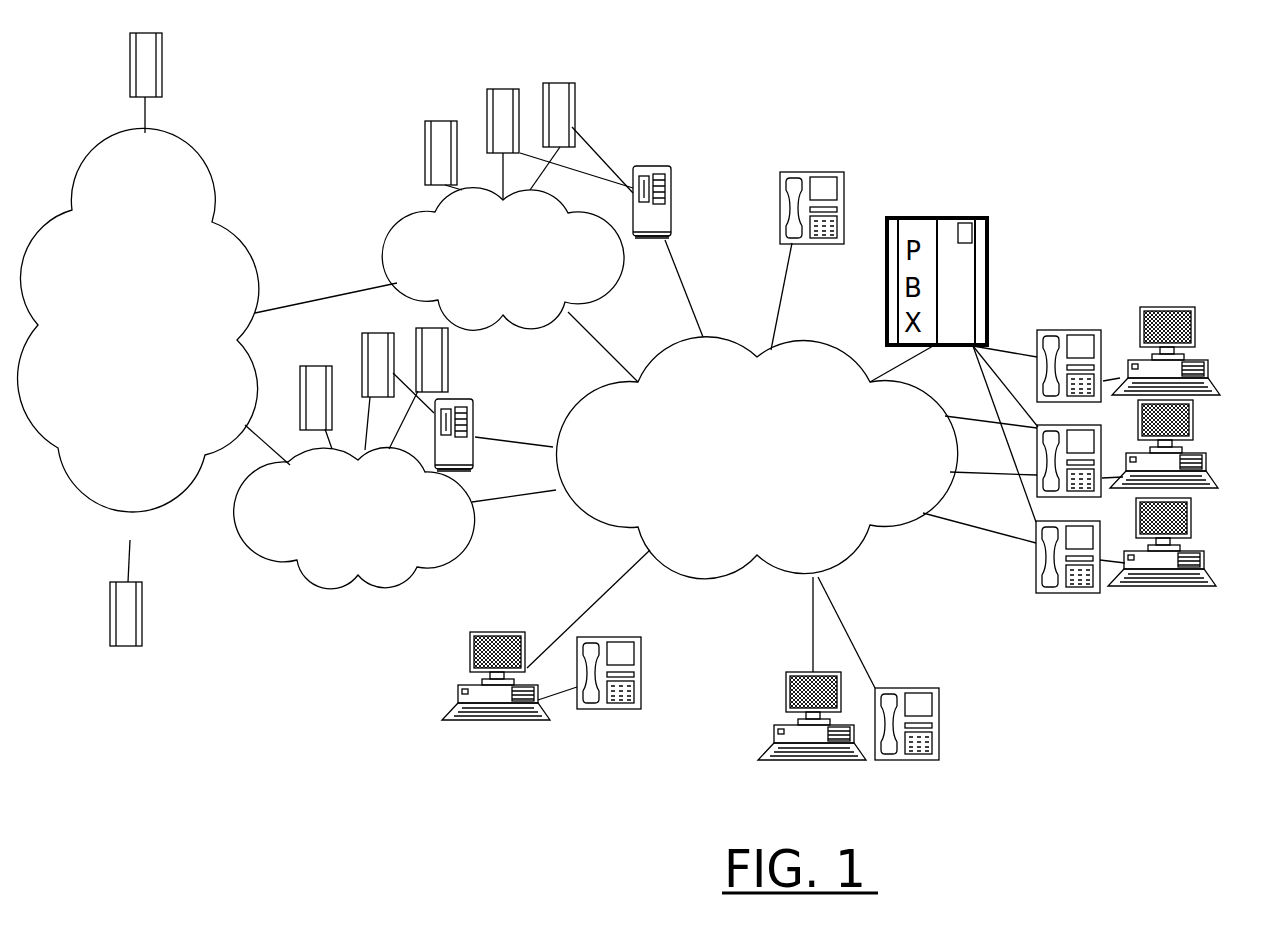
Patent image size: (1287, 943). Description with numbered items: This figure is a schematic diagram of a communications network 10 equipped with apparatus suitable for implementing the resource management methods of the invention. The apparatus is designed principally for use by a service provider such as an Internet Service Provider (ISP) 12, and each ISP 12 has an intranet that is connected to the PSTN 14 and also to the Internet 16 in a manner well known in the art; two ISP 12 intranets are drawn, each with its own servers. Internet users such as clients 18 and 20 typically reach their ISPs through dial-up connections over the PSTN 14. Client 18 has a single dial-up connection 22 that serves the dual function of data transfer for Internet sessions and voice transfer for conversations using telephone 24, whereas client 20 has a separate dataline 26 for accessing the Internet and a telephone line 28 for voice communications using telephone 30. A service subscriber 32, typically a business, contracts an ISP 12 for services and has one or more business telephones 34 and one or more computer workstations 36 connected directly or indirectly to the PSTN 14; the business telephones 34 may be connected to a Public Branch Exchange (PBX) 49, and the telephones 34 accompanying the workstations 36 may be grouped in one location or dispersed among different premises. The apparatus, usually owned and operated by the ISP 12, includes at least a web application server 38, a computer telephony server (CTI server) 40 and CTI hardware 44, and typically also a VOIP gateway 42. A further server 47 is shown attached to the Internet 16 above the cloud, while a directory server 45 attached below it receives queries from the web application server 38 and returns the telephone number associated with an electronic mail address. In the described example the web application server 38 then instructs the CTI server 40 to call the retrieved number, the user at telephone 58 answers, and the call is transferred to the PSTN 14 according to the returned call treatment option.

The communications network 10 is at (945, 148).
The Internet Service Provider (ISP) 12 is at (412, 217).
The PSTN 14 is at (800, 337).
The Internet 16 is at (212, 190).
The client 18 is at (488, 705).
The client 20 is at (807, 757).
The dial-up connection 22 is at (597, 612).
The telephone 24 is at (610, 708).
The dataline 26 is at (810, 650).
The telephone line 28 is at (850, 632).
The telephone 30 is at (938, 738).
The service subscriber 32 is at (1113, 235).
The business telephone 34 is at (1040, 357).
The computer workstation 36 is at (1143, 313).
The web application server 38 is at (443, 128).
The computer telephony server (CTI server) 40 is at (493, 103).
The VOIP gateway 42 is at (568, 110).
The CTI hardware 44 is at (673, 215).
The directory server 45 is at (137, 625).
The server 47 is at (163, 73).
The Public Branch Exchange (PBX) 49 is at (960, 223).
The telephone 58 is at (793, 172).